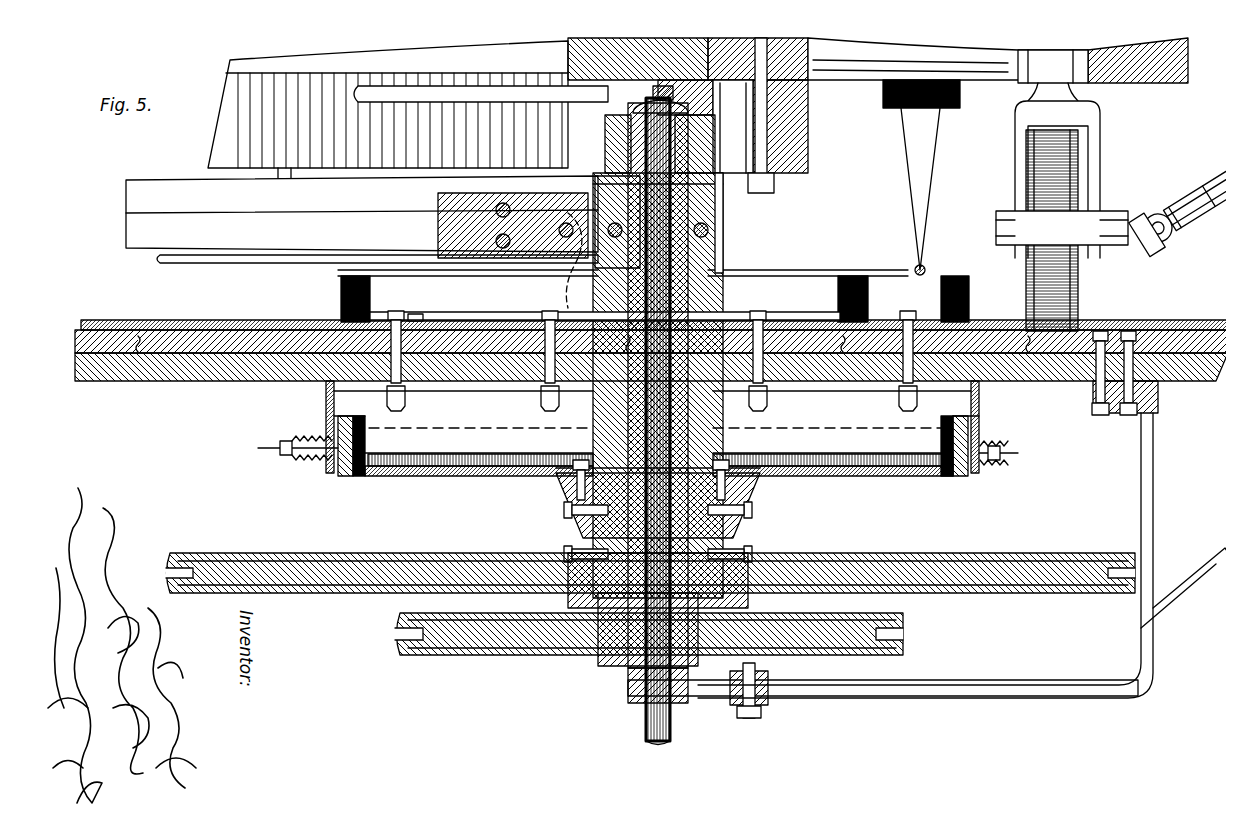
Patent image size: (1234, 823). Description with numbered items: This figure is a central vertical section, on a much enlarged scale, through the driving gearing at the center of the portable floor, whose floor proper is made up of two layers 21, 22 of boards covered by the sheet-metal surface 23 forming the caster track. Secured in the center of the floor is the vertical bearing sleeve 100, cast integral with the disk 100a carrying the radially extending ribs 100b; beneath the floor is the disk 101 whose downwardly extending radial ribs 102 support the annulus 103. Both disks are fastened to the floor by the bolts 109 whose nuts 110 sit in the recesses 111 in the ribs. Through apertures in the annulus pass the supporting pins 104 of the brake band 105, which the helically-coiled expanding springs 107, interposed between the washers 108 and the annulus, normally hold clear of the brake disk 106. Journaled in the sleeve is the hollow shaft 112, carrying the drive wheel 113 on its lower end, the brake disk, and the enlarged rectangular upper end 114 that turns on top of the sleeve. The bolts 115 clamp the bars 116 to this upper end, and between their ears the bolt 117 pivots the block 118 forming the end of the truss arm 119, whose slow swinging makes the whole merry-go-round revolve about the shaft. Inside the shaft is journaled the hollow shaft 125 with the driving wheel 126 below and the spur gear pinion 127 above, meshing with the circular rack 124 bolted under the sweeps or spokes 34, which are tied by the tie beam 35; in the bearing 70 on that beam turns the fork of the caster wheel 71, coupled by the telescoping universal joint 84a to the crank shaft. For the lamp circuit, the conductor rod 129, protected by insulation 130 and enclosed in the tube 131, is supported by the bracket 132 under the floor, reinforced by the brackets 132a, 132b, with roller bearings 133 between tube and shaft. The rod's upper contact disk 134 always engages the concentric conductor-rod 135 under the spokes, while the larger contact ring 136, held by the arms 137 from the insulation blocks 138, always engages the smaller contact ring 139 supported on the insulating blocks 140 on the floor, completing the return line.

The layer of boards 21 is at (112, 318).
The layer of boards 22 is at (110, 368).
The sheet-metal surface 23 is at (150, 320).
The sweeps or spokes 34 is at (470, 44).
The tie beam 35 is at (1172, 75).
The bearing 70 is at (1030, 55).
The caster wheel 71 is at (1045, 165).
The telescoping universal joint 84a is at (1210, 212).
The vertical bearing sleeve 100 is at (715, 268).
The disk 100a is at (455, 306).
The radially extending ribs 100b is at (705, 292).
The disk 101 is at (470, 386).
The radial ribs 102 is at (508, 468).
The annulus 103 is at (318, 410).
The supporting pins 104 is at (268, 440).
The brake band 105 is at (332, 468).
The brake disk 106 is at (357, 468).
The helically-coiled expanding springs 107 is at (300, 452).
The washers 108 is at (292, 430).
The bolts 109 is at (380, 306).
The nuts 110 is at (380, 395).
The recesses 111 is at (850, 425).
The hollow shaft 112 is at (575, 522).
The drive wheel 113 is at (458, 532).
The enlarged rectangular upper end 114 is at (712, 248).
The bolts 115 is at (710, 228).
The bars or pieces 116 is at (585, 205).
The bolt 117 is at (560, 276).
The block 118 is at (430, 228).
The truss beam or arm 119 is at (118, 192).
The circular rack 124 is at (790, 95).
The hollow shaft 125 is at (590, 650).
The driving wheel 126 is at (387, 626).
The spur gear pinion 127 is at (770, 150).
The conductor rod 129 is at (636, 722).
The insulation 130 is at (645, 738).
The tube 131 is at (620, 680).
The bracket 132 is at (995, 688).
The bracket 132a is at (762, 678).
The bracket 132b is at (755, 700).
The roller bearings 133 is at (690, 125).
The contact disk 134 is at (725, 108).
The conductor-rod 135 is at (378, 78).
The contact ring 136 is at (918, 258).
The arms 137 is at (905, 200).
The insulation blocks 138 is at (882, 105).
The contact ring 139 is at (922, 266).
The blocks of insulating material 140 is at (333, 285).